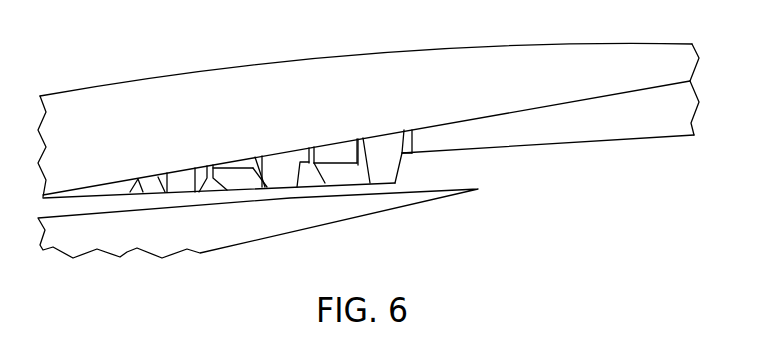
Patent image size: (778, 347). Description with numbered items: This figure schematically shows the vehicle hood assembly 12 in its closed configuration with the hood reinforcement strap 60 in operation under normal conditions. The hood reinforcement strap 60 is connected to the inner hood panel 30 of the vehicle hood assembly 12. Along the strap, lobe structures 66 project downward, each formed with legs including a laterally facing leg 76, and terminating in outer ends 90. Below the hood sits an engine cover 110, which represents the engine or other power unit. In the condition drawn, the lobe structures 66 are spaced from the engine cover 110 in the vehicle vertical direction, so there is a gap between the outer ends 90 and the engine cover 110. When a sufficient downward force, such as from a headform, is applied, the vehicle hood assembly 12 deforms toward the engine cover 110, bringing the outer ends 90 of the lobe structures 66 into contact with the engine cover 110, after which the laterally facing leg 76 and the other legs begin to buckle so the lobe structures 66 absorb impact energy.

The vehicle hood assembly 12 is at (366, 104).
The inner hood panel 30 is at (550, 128).
The hood reinforcement strap 60 is at (366, 108).
The lobe structures 66 is at (243, 137).
The laterally facing leg 76 is at (388, 170).
The outer ends 90 is at (338, 187).
The engine cover 110 is at (127, 245).